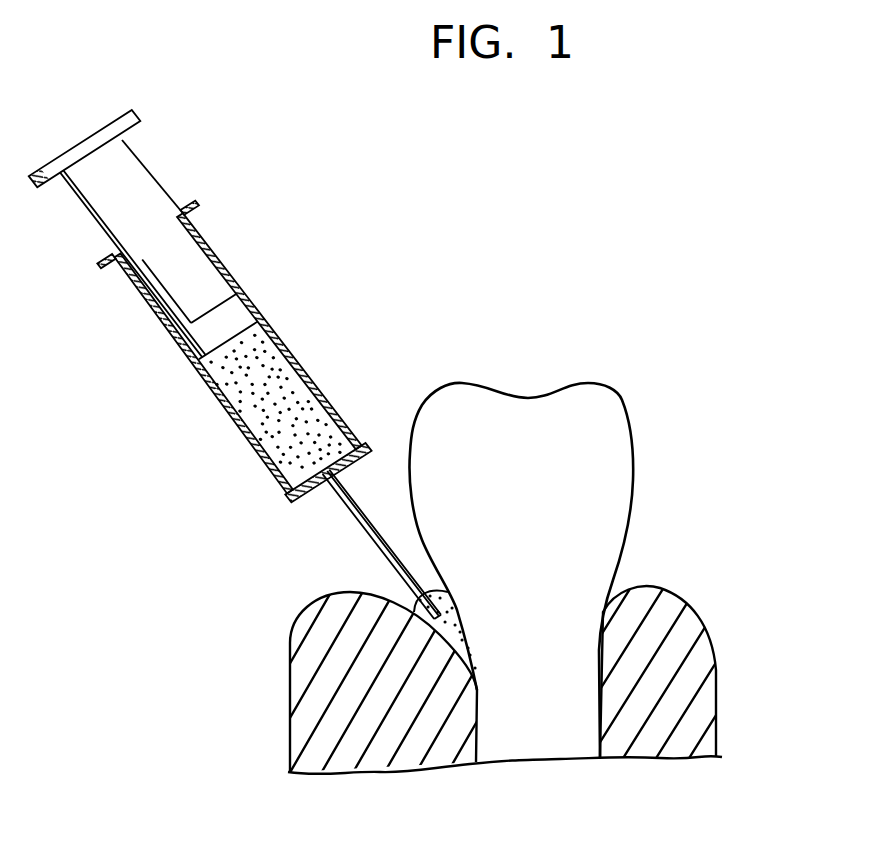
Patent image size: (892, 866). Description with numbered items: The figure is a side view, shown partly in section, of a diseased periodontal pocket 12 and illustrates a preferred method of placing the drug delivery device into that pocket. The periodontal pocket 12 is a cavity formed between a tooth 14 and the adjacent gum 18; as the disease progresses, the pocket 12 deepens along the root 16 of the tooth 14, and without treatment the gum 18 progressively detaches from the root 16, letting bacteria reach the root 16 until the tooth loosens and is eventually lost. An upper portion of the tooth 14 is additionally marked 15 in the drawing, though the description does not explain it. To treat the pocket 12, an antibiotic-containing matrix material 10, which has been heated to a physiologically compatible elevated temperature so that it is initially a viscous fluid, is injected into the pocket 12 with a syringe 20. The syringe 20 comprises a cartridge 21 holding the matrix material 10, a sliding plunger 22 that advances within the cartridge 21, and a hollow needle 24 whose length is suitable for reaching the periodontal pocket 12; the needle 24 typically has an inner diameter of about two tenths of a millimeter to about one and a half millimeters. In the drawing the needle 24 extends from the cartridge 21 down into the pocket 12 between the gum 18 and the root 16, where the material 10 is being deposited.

The antibiotic-containing matrix material 10 is at (293, 407).
The periodontal pocket 12 is at (468, 607).
The tooth 14 is at (570, 556).
The tooth crown 15 is at (623, 402).
The root 16 is at (563, 742).
The gum 18 is at (294, 698).
The syringe 20 is at (235, 345).
The cartridge 21 is at (277, 330).
The sliding plunger 22 is at (203, 277).
The hollow needle 24 is at (360, 529).